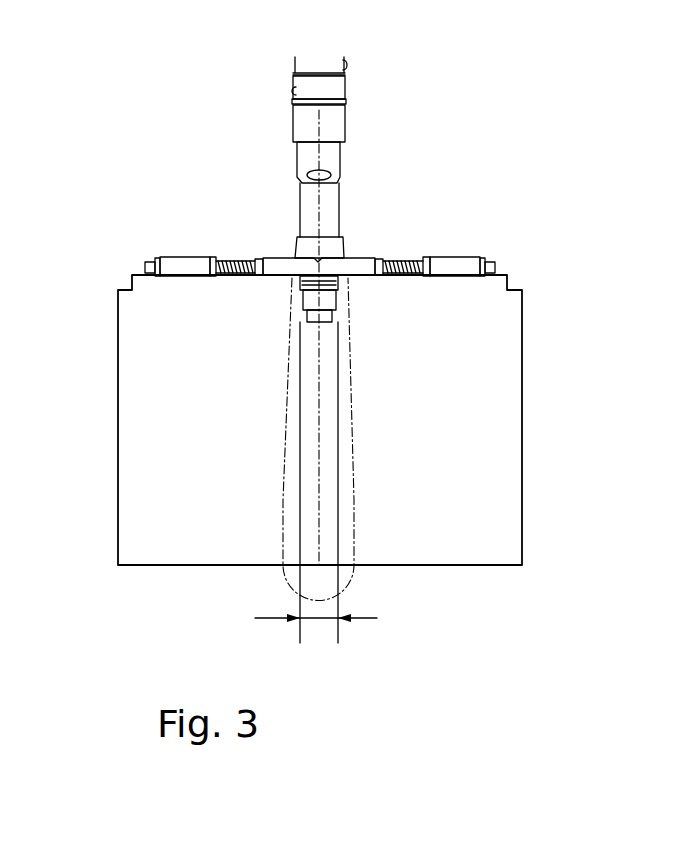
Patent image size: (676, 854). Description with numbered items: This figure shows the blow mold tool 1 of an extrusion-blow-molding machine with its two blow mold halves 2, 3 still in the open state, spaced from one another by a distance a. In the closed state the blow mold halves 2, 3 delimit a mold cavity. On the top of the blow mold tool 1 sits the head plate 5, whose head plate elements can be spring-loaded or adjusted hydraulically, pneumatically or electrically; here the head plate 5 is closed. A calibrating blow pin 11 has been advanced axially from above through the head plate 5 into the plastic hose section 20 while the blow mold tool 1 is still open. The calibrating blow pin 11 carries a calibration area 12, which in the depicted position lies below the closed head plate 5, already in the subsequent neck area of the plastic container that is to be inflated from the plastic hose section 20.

The blow mold tool 1 is at (128, 159).
The blow mold half 2 is at (130, 467).
The blow mold half 3 is at (510, 433).
The head plate 5 is at (275, 262).
The calibrating blow pin 11 is at (313, 195).
The calibration area 12 is at (322, 287).
The plastic hose section 20 is at (293, 535).
The distance a is at (321, 620).